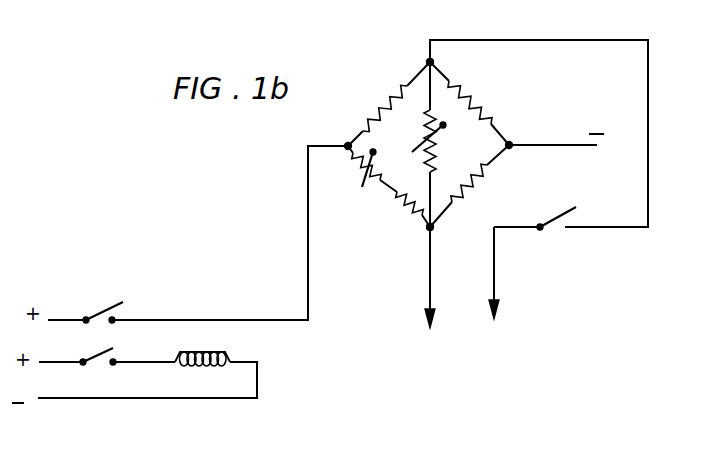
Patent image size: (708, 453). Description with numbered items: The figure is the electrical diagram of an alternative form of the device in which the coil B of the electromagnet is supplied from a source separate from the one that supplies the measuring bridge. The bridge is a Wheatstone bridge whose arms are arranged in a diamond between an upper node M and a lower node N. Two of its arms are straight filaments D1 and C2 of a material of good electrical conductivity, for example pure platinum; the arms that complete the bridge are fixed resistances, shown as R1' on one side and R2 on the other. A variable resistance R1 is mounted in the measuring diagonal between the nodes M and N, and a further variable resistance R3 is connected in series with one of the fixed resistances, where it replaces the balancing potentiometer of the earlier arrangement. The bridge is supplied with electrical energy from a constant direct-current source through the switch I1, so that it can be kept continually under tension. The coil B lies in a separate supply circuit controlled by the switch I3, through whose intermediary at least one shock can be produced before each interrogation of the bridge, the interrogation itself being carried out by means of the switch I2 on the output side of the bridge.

The fixed resistance arm R1' is at (383, 104).
The variable resistance R1 is at (437, 144).
The fixed resistance arm R2 is at (402, 213).
The variable resistance R3 is at (363, 171).
The straight filament D1 is at (472, 103).
The straight filament C2 is at (471, 186).
The switch I1 is at (102, 303).
The switch I2 is at (556, 235).
The switch I3 is at (90, 350).
The coil of electromagnet B is at (202, 345).
The bridge node M is at (442, 57).
The bridge node N is at (441, 236).